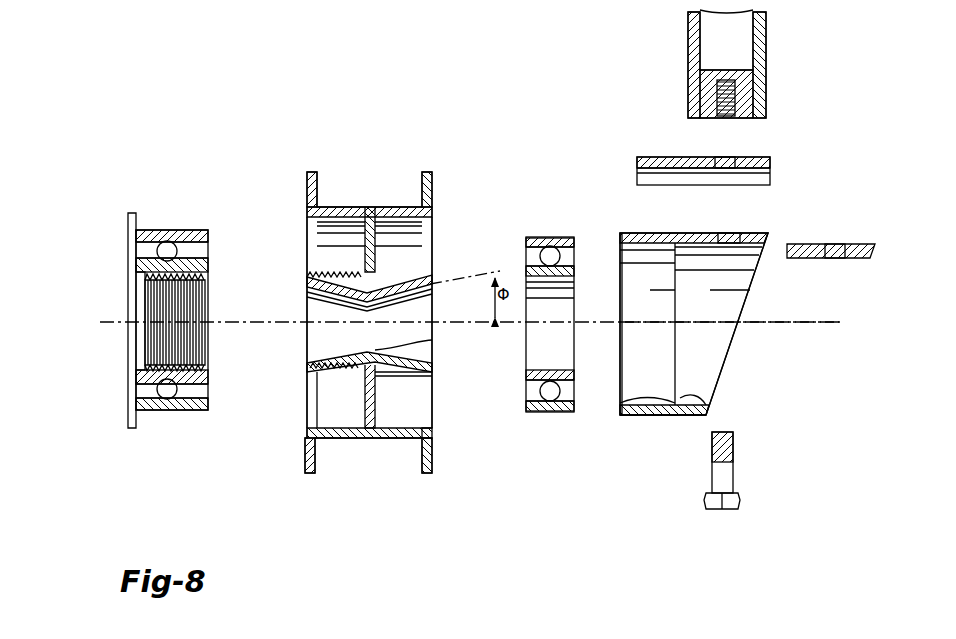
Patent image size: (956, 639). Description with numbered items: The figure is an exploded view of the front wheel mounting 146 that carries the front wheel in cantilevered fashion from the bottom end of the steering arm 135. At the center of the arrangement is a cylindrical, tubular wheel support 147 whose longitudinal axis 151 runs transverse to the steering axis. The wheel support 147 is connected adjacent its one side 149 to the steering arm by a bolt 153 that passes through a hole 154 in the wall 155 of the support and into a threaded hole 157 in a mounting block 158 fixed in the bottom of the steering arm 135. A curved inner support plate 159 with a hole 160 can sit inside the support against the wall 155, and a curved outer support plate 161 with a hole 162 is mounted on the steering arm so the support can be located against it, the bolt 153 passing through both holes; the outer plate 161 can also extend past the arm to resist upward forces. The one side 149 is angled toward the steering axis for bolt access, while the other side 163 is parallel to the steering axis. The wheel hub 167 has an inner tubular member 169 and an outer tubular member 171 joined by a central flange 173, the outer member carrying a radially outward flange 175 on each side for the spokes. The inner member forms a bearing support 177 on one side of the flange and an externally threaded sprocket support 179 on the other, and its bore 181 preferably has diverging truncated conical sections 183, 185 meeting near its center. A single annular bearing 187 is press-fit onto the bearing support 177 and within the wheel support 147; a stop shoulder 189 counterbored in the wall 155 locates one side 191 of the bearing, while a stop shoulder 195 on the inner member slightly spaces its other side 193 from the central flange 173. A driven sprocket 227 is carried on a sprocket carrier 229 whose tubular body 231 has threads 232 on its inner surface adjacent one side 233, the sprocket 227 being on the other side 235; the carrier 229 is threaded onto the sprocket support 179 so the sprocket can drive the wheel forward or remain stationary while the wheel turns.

The steering arm 135 is at (770, 24).
The wheel mounting 146 is at (740, 337).
The wheel support 147 is at (690, 232).
The one side 149 is at (722, 365).
The longitudinal axis 151 is at (805, 322).
The bolt 153 is at (730, 480).
The hole 154 is at (730, 232).
The wall 155 is at (722, 395).
The threaded hole 157 is at (742, 80).
The mounting block 158 is at (735, 80).
The curved inner support plate 159 is at (850, 244).
The hole 160 is at (832, 244).
The curved outer support plate 161 is at (772, 162).
The hole 162 is at (725, 157).
The other side 163 is at (612, 272).
The hub 167 is at (375, 460).
The inner tubular member 169 is at (405, 275).
The outer tubular member 171 is at (390, 200).
The central flange 173 is at (367, 235).
The flange 175 is at (428, 478).
The bearing support 177 is at (412, 372).
The sprocket support 179 is at (330, 372).
The bore 181 is at (315, 290).
The truncated conical section 183 is at (410, 358).
The truncated conical section 185 is at (330, 355).
The bearing 187 is at (564, 361).
The stop shoulder 189 is at (545, 414).
The one side 191 is at (574, 320).
The other side 193 is at (432, 360).
The stop shoulder 195 is at (380, 378).
The driven sprocket 227 is at (134, 226).
The sprocket carrier 229 is at (136, 270).
The tubular body 231 is at (190, 240).
The threads 232 is at (185, 360).
The one side 233 is at (198, 280).
The other side 235 is at (140, 260).